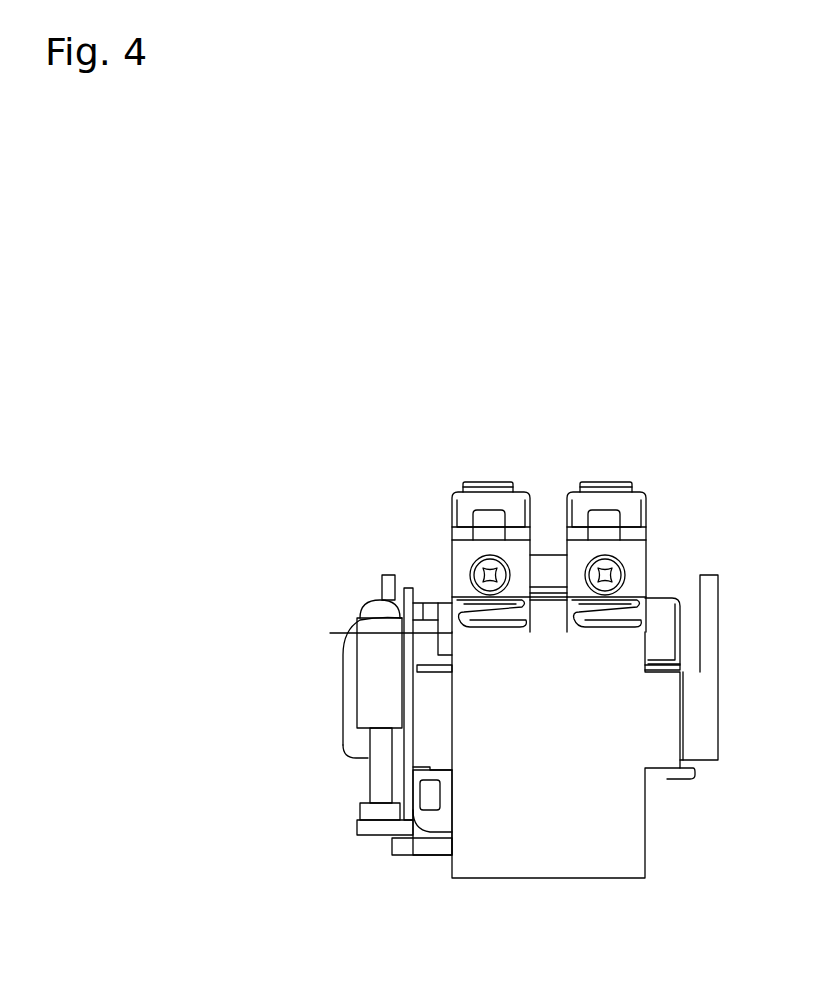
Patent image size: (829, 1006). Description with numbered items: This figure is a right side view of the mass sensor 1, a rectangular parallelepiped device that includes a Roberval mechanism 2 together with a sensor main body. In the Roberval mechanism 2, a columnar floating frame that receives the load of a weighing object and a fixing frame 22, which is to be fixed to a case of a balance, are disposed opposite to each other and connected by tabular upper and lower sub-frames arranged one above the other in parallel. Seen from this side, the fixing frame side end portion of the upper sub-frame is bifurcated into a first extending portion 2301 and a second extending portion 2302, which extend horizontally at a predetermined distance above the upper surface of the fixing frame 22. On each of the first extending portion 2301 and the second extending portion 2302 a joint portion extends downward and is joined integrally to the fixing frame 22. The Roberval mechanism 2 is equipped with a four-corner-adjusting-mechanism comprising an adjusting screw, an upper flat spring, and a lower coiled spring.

The mass sensor 1 is at (425, 402).
The Roberval mechanism 2 is at (497, 883).
The fixing frame 22 is at (541, 800).
The first extending portion 2301 is at (458, 562).
The second extending portion 2302 is at (632, 560).